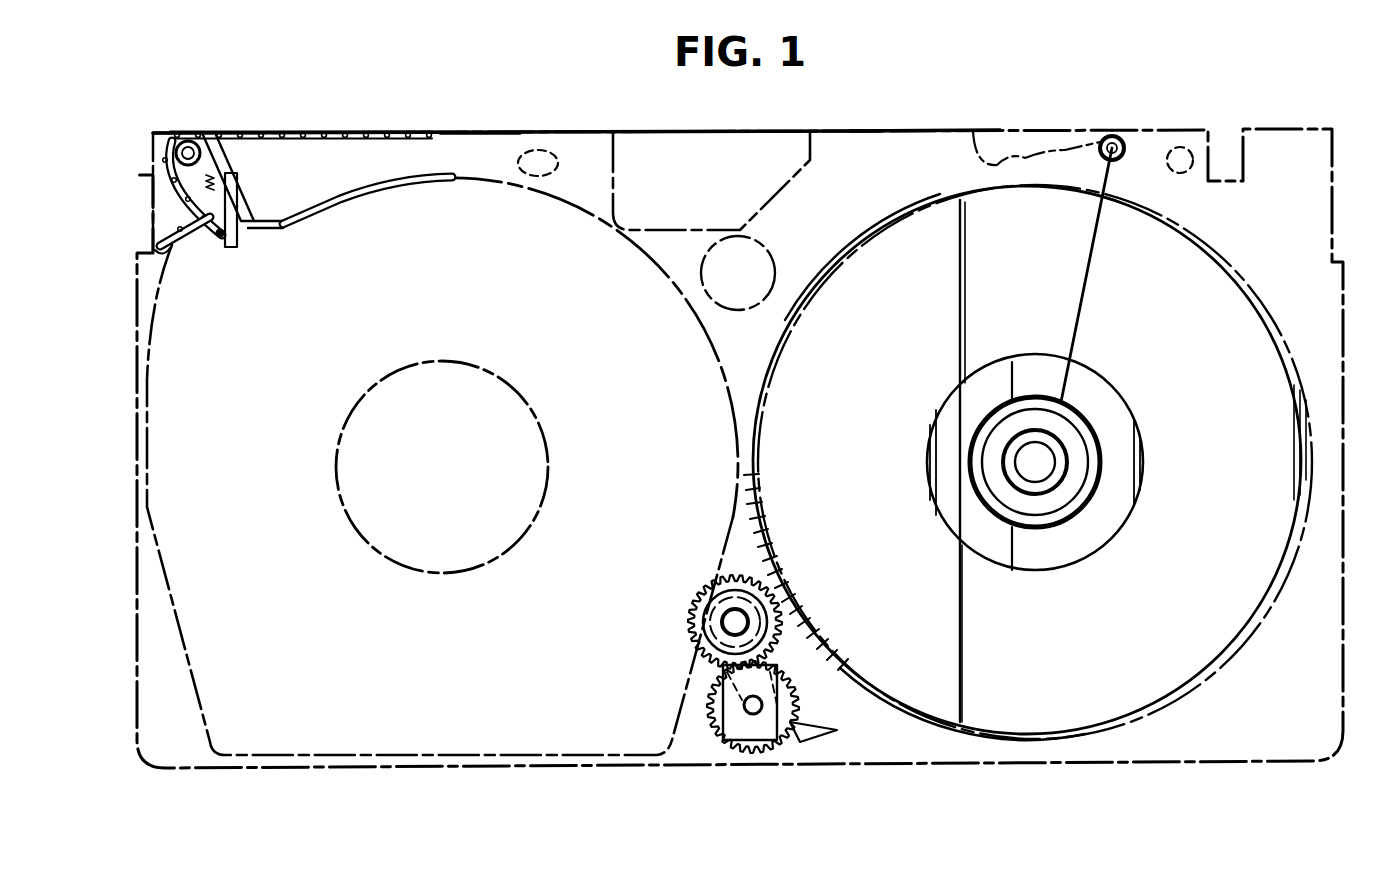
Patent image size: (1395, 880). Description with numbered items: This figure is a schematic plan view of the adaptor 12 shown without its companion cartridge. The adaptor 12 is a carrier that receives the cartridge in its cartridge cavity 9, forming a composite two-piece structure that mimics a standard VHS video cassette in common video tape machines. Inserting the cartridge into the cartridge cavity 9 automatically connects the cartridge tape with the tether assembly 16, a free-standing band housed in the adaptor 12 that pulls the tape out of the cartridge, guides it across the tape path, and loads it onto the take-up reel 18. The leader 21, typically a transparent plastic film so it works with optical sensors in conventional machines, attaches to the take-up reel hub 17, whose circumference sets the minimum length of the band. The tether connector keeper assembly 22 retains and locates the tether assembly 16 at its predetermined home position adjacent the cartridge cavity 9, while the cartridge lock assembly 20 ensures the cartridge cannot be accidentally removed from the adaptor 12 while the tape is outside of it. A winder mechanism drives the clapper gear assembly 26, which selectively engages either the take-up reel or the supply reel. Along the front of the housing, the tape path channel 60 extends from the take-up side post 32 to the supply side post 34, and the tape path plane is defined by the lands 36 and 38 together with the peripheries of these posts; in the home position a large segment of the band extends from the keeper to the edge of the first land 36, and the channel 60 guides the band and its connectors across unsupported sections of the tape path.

The cartridge cavity 9 is at (252, 520).
The adaptor 12 is at (1283, 118).
The tether assembly 16 is at (315, 128).
The take-up reel hub 17 is at (1102, 462).
The take-up reel 18 is at (1297, 375).
The cartridge lock assembly 20 is at (188, 248).
The leader 21 is at (1083, 313).
The tether connector keeper assembly 22 is at (255, 195).
The clapper gear assembly 26 is at (825, 683).
The take-up side post 32 is at (1118, 136).
The supply side post 34 is at (190, 140).
The first land 36 is at (467, 133).
The land 38 is at (880, 132).
The tape path channel 60 is at (565, 130).